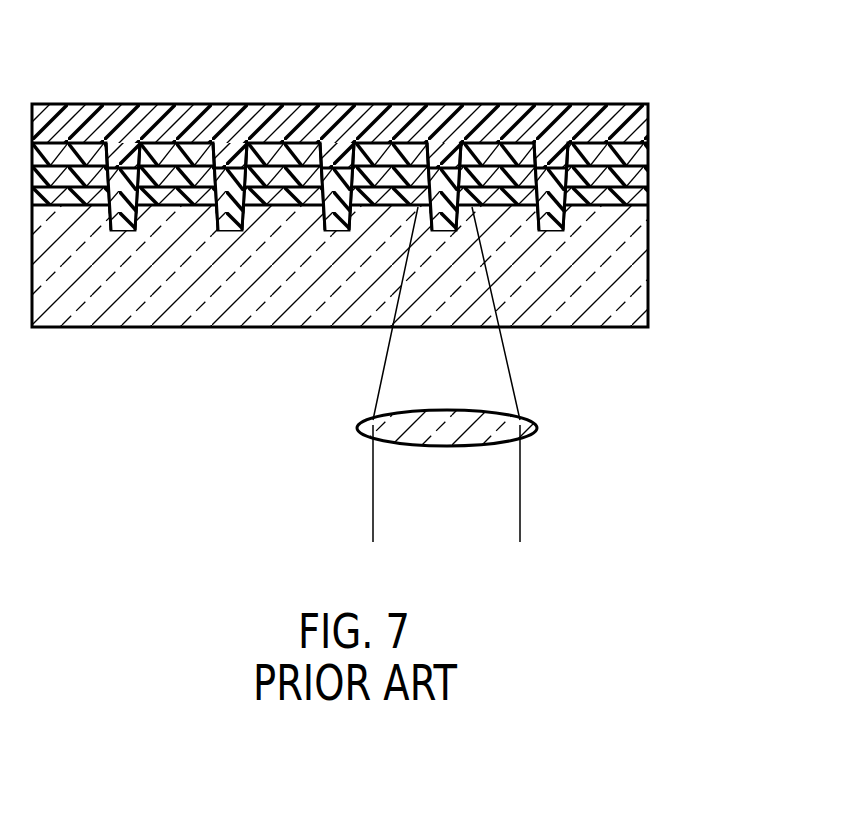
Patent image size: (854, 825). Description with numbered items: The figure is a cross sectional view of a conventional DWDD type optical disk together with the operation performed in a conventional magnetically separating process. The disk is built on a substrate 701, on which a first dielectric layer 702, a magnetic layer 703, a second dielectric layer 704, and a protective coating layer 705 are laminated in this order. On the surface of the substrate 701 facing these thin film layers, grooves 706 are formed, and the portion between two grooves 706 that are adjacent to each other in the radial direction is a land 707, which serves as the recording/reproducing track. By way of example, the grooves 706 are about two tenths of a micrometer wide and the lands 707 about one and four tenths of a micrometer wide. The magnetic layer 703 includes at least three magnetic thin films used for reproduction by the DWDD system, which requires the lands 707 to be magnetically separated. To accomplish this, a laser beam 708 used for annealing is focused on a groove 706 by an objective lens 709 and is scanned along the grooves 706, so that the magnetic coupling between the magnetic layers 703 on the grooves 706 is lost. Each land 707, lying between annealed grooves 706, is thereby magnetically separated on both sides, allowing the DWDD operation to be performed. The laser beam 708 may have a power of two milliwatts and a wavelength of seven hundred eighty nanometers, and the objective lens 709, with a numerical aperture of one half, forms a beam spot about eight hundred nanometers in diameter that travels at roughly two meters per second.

The substrate 701 is at (635, 248).
The first dielectric layer 702 is at (648, 192).
The magnetic layer 703 is at (648, 172).
The second dielectric layer 704 is at (648, 150).
The protective coating layer 705 is at (648, 122).
The groove 706 is at (230, 228).
The land 707 is at (288, 143).
The laser beam 708 is at (520, 483).
The objective lens 709 is at (537, 427).